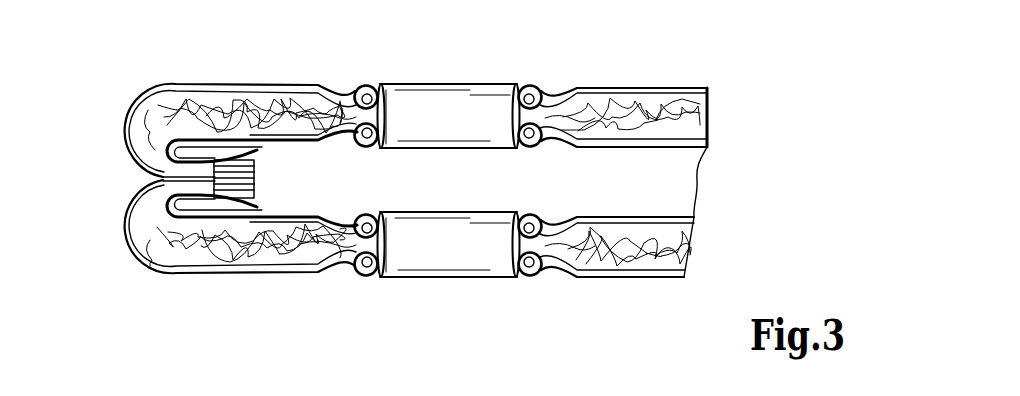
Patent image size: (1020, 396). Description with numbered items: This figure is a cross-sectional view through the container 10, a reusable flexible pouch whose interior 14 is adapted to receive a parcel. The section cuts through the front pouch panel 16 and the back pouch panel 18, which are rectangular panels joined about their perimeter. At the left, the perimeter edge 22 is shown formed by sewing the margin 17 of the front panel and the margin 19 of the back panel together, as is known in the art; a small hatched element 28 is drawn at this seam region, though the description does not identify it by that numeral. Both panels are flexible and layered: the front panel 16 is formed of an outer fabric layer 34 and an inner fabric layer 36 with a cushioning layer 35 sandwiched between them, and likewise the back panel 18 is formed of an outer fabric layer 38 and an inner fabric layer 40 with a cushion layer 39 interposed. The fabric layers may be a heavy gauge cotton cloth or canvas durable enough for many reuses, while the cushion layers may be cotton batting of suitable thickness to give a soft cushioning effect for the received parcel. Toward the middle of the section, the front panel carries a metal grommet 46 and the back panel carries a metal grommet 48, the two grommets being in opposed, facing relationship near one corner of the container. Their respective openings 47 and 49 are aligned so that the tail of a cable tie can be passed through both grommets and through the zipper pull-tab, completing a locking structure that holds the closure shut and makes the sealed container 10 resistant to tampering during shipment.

The container 10 is at (290, 47).
The interior 14 is at (448, 180).
The front pouch panel 16 is at (633, 87).
The margin 17 is at (257, 150).
The back pouch panel 18 is at (615, 277).
The margin 19 is at (257, 207).
The edge 22 is at (160, 179).
The fastener 28 is at (254, 176).
The outer fabric layer 34 is at (707, 91).
The cushioning layer 35 is at (695, 113).
The inner fabric layer 36 is at (707, 146).
The outer fabric layer 38 is at (684, 274).
The cushion layer 39 is at (687, 245).
The inner fabric layer 40 is at (694, 217).
The metal grommet 46 is at (438, 105).
The opening 47 is at (400, 88).
The metal grommet 48 is at (481, 262).
The opening 49 is at (411, 267).